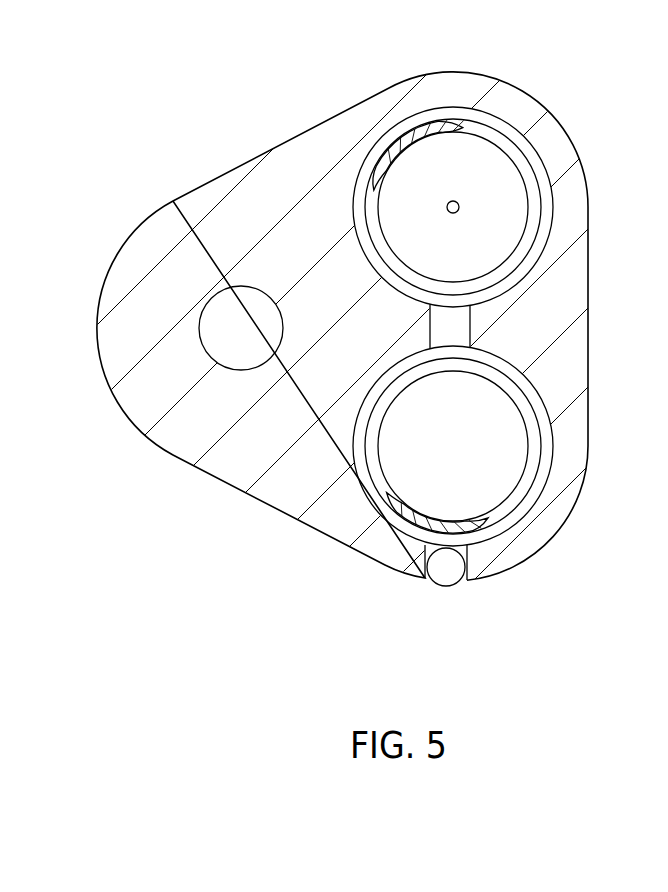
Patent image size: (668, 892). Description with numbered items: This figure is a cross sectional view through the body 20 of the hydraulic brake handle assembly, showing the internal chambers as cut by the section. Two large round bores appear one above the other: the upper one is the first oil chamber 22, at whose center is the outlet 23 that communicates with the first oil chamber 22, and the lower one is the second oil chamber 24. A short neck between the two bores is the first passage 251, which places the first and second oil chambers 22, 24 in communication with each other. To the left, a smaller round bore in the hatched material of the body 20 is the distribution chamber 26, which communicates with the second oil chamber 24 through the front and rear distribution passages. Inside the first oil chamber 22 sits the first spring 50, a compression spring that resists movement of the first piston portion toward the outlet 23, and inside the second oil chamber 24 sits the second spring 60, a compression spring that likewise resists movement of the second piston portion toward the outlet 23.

The body 20 is at (237, 149).
The first oil chamber 22 is at (508, 193).
The outlet 23 is at (453, 201).
The second oil chamber 24 is at (507, 463).
The first passage 251 is at (457, 327).
The distribution chamber 26 is at (225, 305).
The first spring 50 is at (418, 138).
The second spring 60 is at (477, 528).